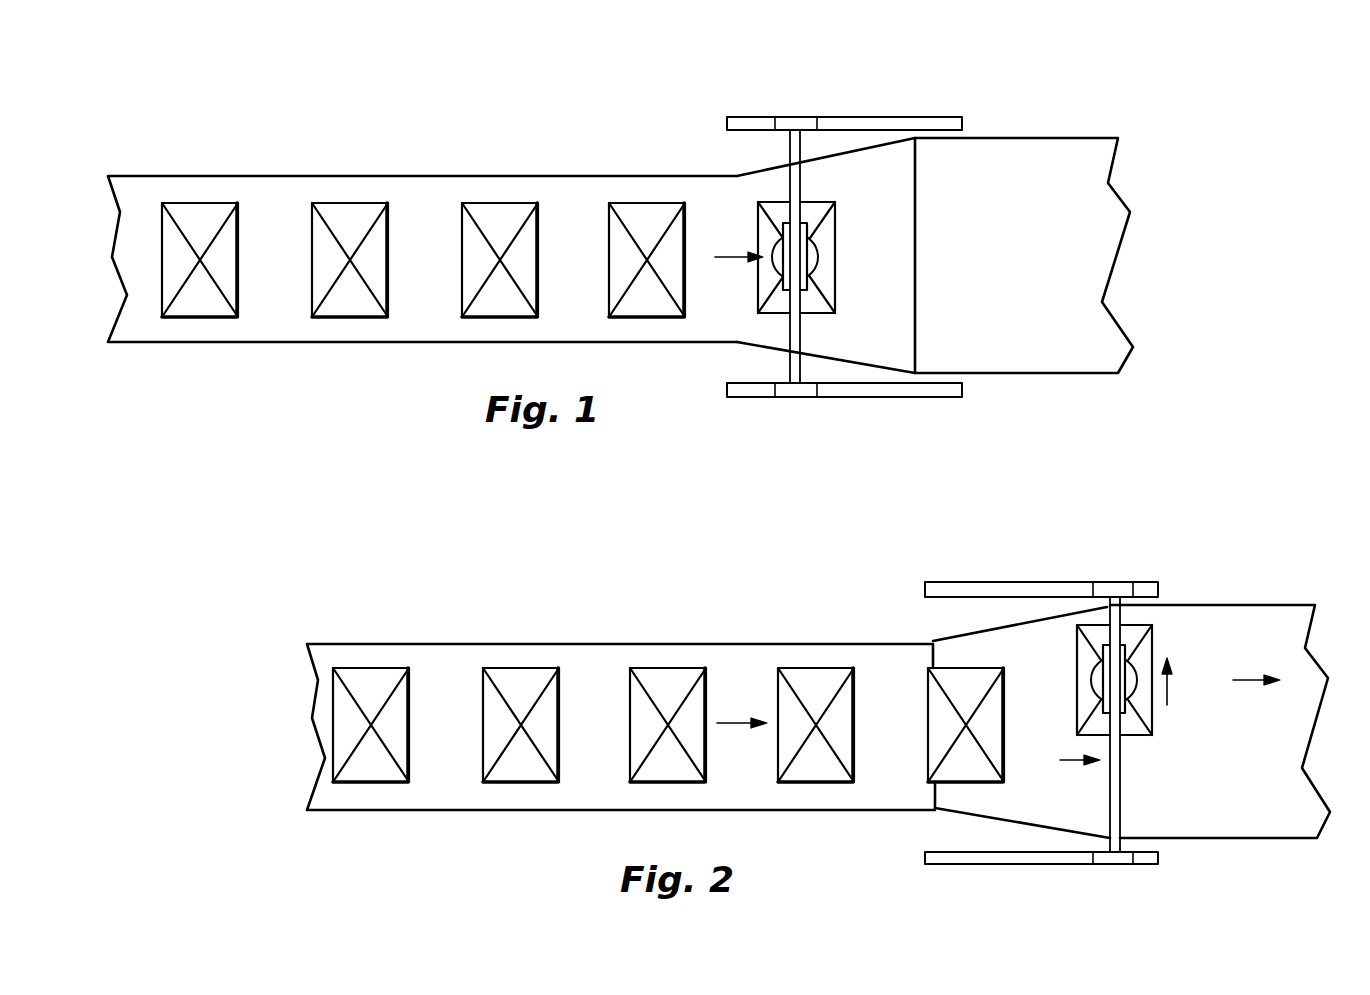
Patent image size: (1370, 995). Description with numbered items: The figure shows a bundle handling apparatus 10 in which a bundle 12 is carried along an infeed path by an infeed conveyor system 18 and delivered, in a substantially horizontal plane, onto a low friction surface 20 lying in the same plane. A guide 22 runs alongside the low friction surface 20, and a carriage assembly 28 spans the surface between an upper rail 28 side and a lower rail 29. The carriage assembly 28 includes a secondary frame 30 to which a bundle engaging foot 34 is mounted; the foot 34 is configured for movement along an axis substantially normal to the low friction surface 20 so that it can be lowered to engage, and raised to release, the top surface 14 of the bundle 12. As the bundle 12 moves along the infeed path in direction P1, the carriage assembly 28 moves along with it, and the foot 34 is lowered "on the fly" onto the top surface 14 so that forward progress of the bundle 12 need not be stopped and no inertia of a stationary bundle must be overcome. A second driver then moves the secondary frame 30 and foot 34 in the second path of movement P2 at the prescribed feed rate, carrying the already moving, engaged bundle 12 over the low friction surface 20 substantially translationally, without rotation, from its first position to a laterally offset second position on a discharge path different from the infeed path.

In FIG. 1, the article positioning apparatus 10 is at (912, 68).
In FIG. 2, the article positioning apparatus 10 is at (1222, 532).
In FIG. 1, the bundle 12 is at (325, 257).
In FIG. 2, the bundle 12 is at (640, 722).
In FIG. 1, the top surface 14 is at (823, 278).
In FIG. 2, the top surface 14 is at (1130, 735).
In FIG. 1, the infeed conveyor system 18 is at (426, 298).
In FIG. 2, the infeed conveyor system 18 is at (447, 765).
In FIG. 1, the low friction surface 20 is at (888, 280).
In FIG. 2, the low friction surface 20 is at (1032, 795).
In FIG. 1, the guide rail 22 is at (843, 362).
In FIG. 2, the guide rail 22 is at (972, 628).
In FIG. 1, the carriage assembly 28 is at (793, 95).
In FIG. 2, the carriage assembly 28 is at (1113, 562).
In FIG. 1, the lower rail 29 is at (797, 400).
In FIG. 2, the lower rail 29 is at (1113, 868).
In FIG. 1, the secondary frame 30 is at (797, 253).
In FIG. 2, the secondary frame 30 is at (1114, 687).
In FIG. 1, the bundle engaging foot 34 is at (772, 243).
In FIG. 2, the bundle engaging foot 34 is at (1098, 672).
In FIG. 1, the first position P1 is at (717, 262).
In FIG. 2, the first position P1 is at (740, 727).
In FIG. 2, the second path of movement P2 is at (1170, 692).